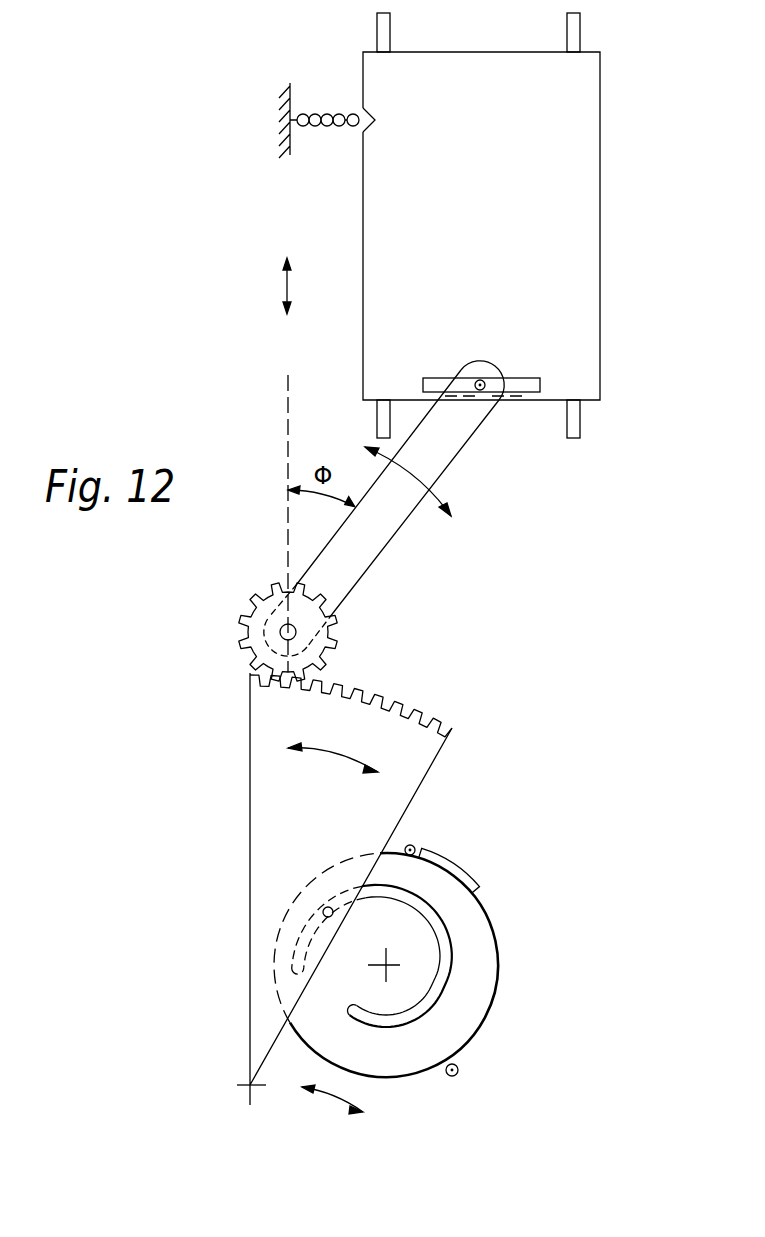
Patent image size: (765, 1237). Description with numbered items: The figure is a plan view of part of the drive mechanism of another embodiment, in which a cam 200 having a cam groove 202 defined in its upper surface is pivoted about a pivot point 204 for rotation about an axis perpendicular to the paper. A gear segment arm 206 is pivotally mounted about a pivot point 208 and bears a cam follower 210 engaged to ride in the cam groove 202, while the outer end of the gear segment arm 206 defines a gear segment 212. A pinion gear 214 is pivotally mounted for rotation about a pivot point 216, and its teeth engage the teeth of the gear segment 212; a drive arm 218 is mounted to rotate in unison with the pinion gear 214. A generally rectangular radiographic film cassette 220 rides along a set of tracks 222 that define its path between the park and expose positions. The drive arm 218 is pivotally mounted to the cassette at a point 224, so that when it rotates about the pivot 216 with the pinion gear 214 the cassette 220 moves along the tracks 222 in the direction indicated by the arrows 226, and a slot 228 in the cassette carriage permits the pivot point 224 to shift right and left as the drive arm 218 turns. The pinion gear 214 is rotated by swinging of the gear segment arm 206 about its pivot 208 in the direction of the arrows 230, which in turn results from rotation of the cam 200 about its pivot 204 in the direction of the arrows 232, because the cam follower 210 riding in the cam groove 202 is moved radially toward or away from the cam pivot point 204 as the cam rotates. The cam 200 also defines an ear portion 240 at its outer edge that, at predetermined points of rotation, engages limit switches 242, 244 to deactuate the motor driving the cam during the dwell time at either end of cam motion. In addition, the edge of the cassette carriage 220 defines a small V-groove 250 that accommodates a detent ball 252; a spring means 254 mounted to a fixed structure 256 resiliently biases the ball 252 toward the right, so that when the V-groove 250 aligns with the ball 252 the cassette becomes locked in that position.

The cam 200 is at (499, 958).
The cam groove 202 is at (410, 1021).
The pivot point 204 is at (380, 967).
The gear segment arm 206 is at (249, 938).
The pivot point 208 is at (249, 1087).
The cam follower 210 is at (338, 909).
The gear segment 212 is at (372, 690).
The pinion gear 214 is at (237, 632).
The pivot point 216 is at (296, 630).
The drive arm 218 is at (452, 466).
The radiographic film cassette 220 is at (362, 345).
The tracks 222 is at (567, 34).
The pivot point 224 is at (479, 380).
The arrows 226 is at (285, 292).
The slot 228 is at (525, 378).
The arrows 230 is at (340, 763).
The arrows 232 is at (330, 1100).
The ear portion 240 is at (467, 868).
The limit switch 242 is at (414, 845).
The limit switch 244 is at (458, 1076).
The V-groove 250 is at (376, 119).
The detent ball 252 is at (352, 113).
The spring means 254 is at (292, 123).
The fixed structure 256 is at (290, 84).